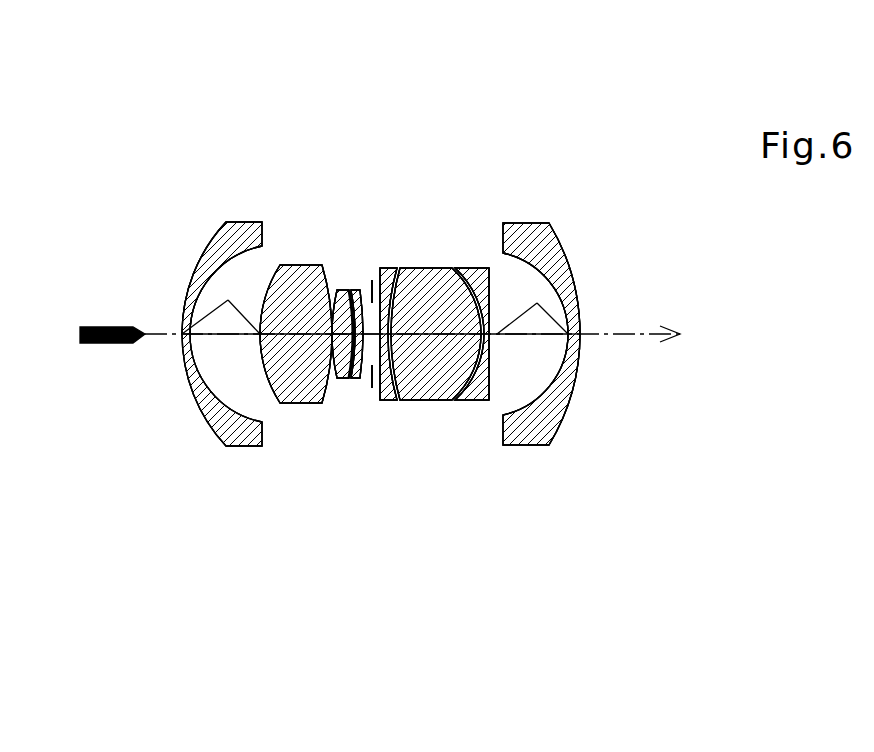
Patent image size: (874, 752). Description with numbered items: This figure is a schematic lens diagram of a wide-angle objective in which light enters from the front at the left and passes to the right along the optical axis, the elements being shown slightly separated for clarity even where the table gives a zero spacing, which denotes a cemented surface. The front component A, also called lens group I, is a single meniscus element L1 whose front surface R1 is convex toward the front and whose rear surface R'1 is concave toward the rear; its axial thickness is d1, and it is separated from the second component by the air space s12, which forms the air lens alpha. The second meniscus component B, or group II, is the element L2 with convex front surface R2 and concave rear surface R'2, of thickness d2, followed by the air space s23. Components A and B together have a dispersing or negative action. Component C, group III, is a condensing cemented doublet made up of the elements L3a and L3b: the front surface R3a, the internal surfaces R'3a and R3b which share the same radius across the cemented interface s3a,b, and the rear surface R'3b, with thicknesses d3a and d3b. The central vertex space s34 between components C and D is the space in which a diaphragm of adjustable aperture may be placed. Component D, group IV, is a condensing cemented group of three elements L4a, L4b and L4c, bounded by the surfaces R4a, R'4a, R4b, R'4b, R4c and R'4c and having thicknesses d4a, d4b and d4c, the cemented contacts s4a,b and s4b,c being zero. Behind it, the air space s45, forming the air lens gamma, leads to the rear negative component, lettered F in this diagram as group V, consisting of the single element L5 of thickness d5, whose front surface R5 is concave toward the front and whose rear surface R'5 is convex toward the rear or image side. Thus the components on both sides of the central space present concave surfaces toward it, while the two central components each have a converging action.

The first lens element L1 is at (212, 429).
The second lens element L2 is at (288, 404).
The front element of the third cemented group L3a is at (337, 380).
The rear element of the third cemented group L3b is at (362, 378).
The front element of the fourth cemented group L4a is at (385, 401).
The middle element of the fourth cemented group L4b is at (437, 401).
The rear element of the fourth cemented group L4c is at (473, 401).
The fifth lens element L5 is at (556, 440).
The front surface radius of element L1 R1 is at (205, 250).
The rear surface radius of element L1 R'1 is at (210, 240).
The front surface radius of element L2 R2 is at (280, 265).
The rear surface radius of element L2 R'2 is at (282, 233).
The front surface radius of element L3a R3a is at (337, 292).
The rear surface radius of element L3a R'3a is at (310, 254).
The front surface radius of element L3b R3b is at (353, 290).
The rear surface radius of element L3b R'3b is at (330, 191).
The front surface radius of element L4a R4a is at (380, 268).
The rear surface radius of element L4a R'4a is at (404, 219).
The front surface radius of element L4b R4b is at (410, 268).
The rear surface radius of element L4b R'4b is at (450, 286).
The front surface radius of element L4c R4c is at (456, 268).
The rear surface radius of element L4c R'4c is at (526, 259).
The front surface radius of element L5 R5 is at (503, 253).
The rear surface radius of element L5 R'5 is at (583, 334).
The axial thickness of element L1 d1 is at (182, 330).
The axial thickness of element L2 d2 is at (296, 339).
The axial thickness of element L3a d3a is at (341, 290).
The axial thickness of element L3b d3b is at (358, 290).
The axial thickness of element L4a d4a is at (390, 268).
The axial thickness of element L4b d4b is at (436, 339).
The axial thickness of element L4c d4c is at (477, 268).
The axial thickness of element L5 d5 is at (579, 312).
The air space between elements L1 and L2 s12 is at (232, 336).
The air space between elements L2 and L3 s23 is at (322, 405).
The spacing between elements L3a and L3b s3a,b is at (345, 382).
The central vertex space s34 is at (378, 385).
The spacing between elements L4a and L4b s4a,b is at (410, 403).
The spacing between elements L4b and L4c s4b,c is at (462, 403).
The air space between component D and element L5 s45 is at (530, 337).
The first lens group I is at (217, 663).
The second lens group II is at (267, 663).
The third lens group III is at (307, 603).
The fourth lens group IV is at (420, 603).
The fifth lens group V is at (612, 645).
The first meniscus component A is at (212, 667).
The second meniscus component B is at (265, 667).
The first condensing component C is at (352, 667).
The second condensing component D is at (500, 667).
The rear negative component F is at (605, 667).